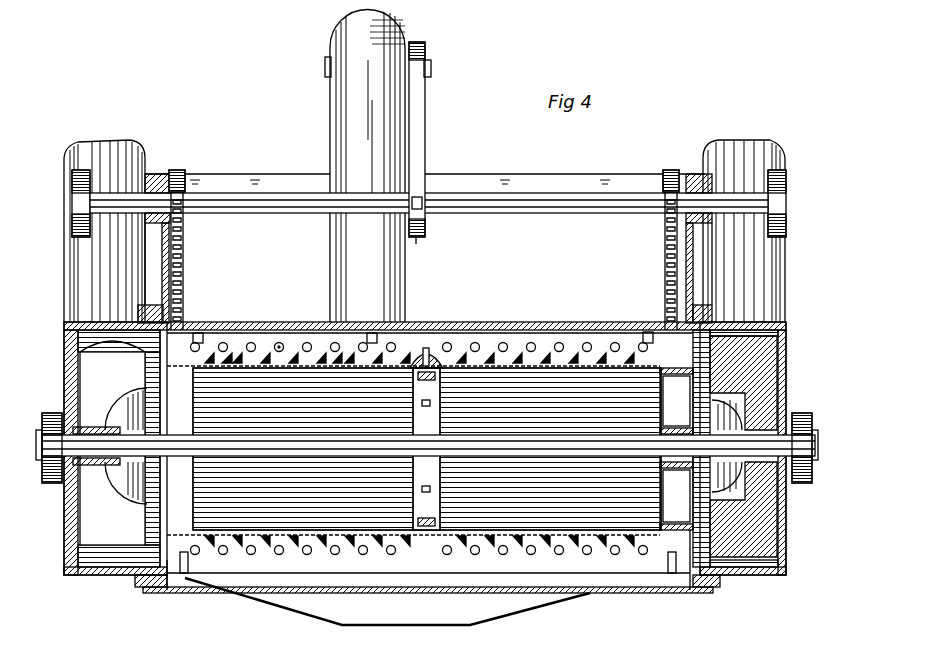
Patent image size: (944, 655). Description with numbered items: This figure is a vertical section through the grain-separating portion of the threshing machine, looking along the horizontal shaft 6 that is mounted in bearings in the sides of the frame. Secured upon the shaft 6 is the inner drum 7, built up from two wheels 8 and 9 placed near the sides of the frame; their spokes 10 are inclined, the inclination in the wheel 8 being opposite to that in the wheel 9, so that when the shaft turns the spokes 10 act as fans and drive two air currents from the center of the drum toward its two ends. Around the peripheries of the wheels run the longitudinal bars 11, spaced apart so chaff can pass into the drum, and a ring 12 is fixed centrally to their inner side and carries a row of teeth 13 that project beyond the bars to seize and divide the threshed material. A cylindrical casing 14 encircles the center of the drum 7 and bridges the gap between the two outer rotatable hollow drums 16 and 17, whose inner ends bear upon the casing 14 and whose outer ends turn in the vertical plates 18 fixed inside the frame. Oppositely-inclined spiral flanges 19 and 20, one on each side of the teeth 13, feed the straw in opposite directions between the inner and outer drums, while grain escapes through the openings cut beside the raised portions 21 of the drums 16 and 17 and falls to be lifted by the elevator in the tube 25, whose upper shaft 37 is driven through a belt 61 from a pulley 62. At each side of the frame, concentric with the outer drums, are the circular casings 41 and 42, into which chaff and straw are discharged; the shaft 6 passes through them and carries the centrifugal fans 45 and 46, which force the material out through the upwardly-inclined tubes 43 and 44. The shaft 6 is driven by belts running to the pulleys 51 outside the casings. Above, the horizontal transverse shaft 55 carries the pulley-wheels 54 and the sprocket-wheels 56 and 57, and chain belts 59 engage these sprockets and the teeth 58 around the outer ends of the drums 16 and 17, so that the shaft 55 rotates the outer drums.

The horizontal shaft 6 is at (428, 446).
The inner drum 7 is at (586, 342).
The wheel 8 is at (648, 332).
The wheel 9 is at (227, 352).
The spokes 10 is at (157, 612).
The longitudinal bars 11 is at (572, 410).
The ring 12 is at (413, 428).
The teeth 13 is at (436, 350).
The cylindrical casing 14 is at (421, 348).
The outer drum 16 is at (556, 342).
The outer drum 17 is at (276, 342).
The vertical plates 18 is at (172, 302).
The spiral flange 19 is at (340, 350).
The spiral flange 20 is at (504, 342).
The raised portions 21 is at (330, 342).
The tube 25 is at (365, 166).
The shaft 37 is at (431, 70).
The casing 41 is at (783, 576).
The casing 42 is at (97, 576).
The upwardly-inclined tube 43 is at (785, 294).
The upwardly-inclined tube 44 is at (64, 288).
The centrifugal fan 45 is at (760, 378).
The centrifugal fan 46 is at (110, 443).
The pulley 51 is at (54, 484).
The pulley-wheel 54 is at (72, 218).
The horizontal transverse shaft 55 is at (292, 214).
The sprocket-wheel 56 is at (672, 170).
The sprocket-wheel 57 is at (178, 170).
The teeth 58 is at (186, 575).
The chain belts 59 is at (184, 254).
The belt 61 is at (425, 141).
The pulley 62 is at (421, 250).